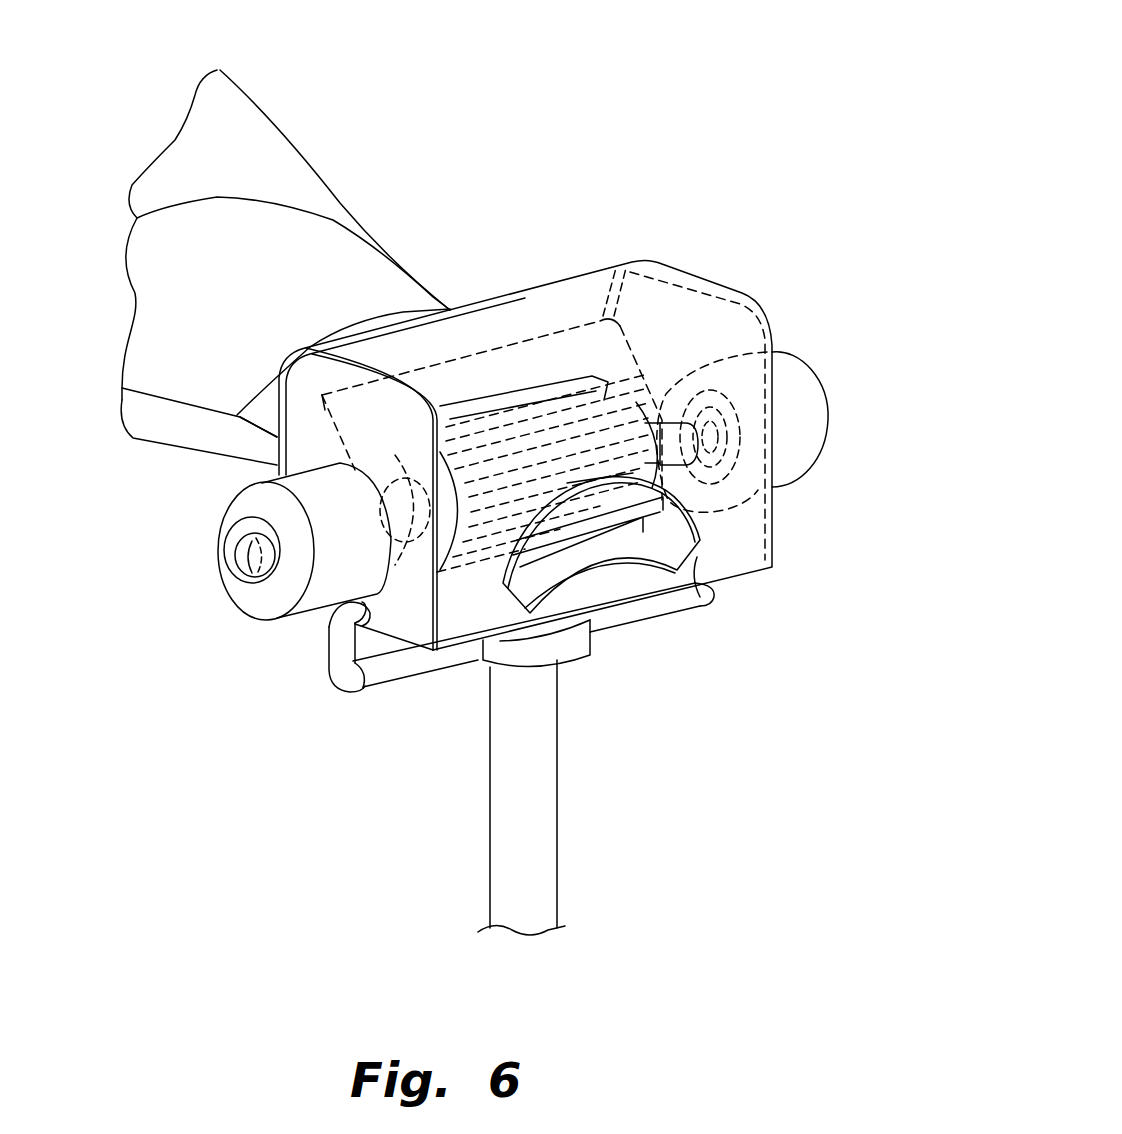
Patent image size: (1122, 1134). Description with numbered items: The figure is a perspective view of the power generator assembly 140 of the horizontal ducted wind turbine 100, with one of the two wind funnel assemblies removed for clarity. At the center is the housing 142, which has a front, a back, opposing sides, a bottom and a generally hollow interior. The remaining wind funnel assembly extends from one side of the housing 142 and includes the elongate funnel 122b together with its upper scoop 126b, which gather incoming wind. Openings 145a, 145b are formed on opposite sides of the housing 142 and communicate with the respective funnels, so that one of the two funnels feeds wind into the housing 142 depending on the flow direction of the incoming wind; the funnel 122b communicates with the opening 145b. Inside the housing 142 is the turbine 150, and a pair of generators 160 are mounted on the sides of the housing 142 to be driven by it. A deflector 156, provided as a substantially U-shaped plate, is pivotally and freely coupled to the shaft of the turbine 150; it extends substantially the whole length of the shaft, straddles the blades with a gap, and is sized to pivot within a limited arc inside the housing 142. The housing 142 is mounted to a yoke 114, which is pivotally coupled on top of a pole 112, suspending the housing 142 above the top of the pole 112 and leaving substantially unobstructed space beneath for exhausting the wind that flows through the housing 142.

The horizontal ducted wind turbine 100 is at (582, 90).
The pole 112 is at (533, 862).
The yoke 114 is at (378, 687).
The elongate funnel 122b is at (387, 283).
The upper scoop 126b is at (247, 130).
The power generator assembly 140 is at (738, 242).
The housing 142 is at (622, 260).
The opening 145a is at (697, 557).
The opening 145b is at (377, 316).
The turbine 150 is at (659, 540).
The deflector 156 is at (544, 354).
The generator 160 is at (793, 468).